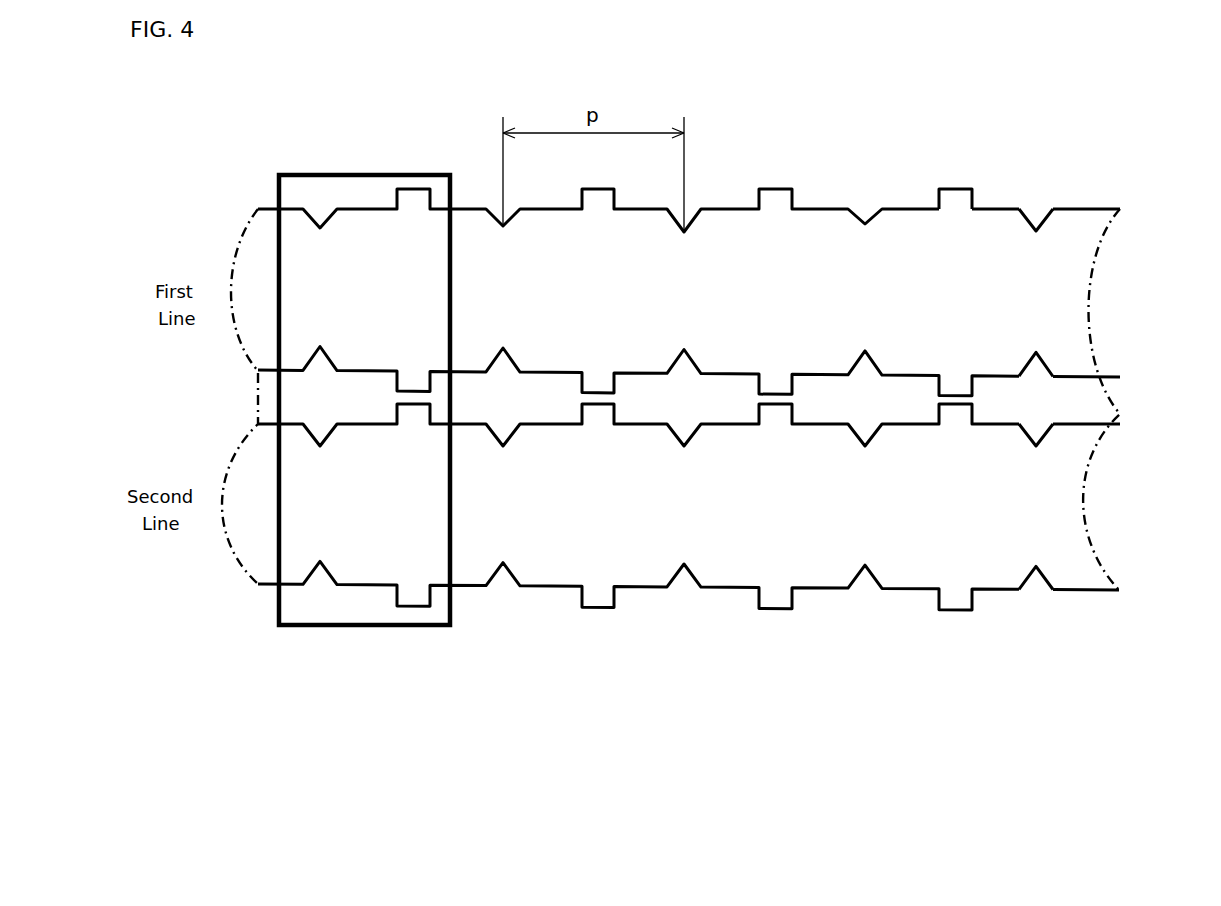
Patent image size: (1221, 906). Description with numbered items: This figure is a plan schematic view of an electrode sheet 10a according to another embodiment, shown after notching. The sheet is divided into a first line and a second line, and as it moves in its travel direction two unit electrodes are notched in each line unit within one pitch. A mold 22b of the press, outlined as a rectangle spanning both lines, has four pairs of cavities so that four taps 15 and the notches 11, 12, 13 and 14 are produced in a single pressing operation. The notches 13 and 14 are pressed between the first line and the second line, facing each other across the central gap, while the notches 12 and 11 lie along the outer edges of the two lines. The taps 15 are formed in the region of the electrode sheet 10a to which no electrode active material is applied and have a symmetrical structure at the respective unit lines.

The mold 22b is at (302, 174).
The tap 15 is at (952, 189).
The notch 12 is at (1037, 229).
The notch 13 is at (1036, 352).
The notch 14 is at (1036, 446).
The notch 11 is at (1035, 568).
The electrode sheet 10a is at (1137, 299).